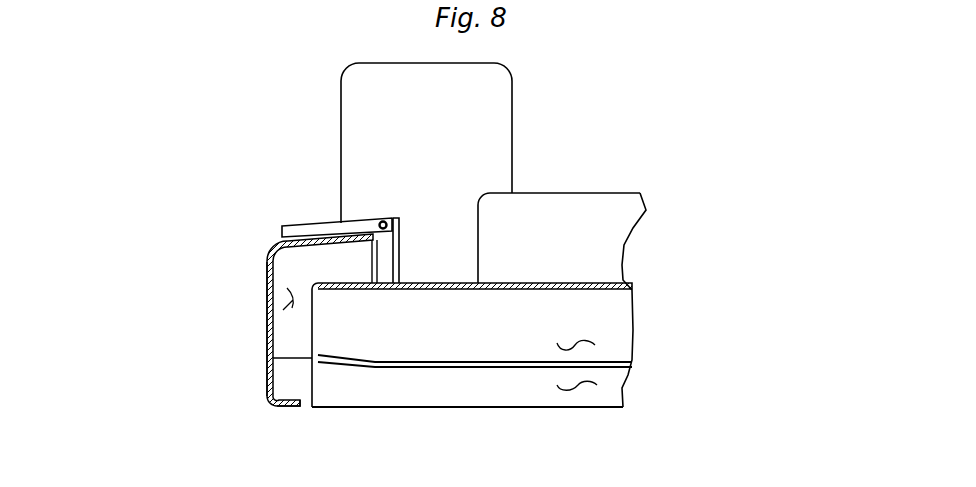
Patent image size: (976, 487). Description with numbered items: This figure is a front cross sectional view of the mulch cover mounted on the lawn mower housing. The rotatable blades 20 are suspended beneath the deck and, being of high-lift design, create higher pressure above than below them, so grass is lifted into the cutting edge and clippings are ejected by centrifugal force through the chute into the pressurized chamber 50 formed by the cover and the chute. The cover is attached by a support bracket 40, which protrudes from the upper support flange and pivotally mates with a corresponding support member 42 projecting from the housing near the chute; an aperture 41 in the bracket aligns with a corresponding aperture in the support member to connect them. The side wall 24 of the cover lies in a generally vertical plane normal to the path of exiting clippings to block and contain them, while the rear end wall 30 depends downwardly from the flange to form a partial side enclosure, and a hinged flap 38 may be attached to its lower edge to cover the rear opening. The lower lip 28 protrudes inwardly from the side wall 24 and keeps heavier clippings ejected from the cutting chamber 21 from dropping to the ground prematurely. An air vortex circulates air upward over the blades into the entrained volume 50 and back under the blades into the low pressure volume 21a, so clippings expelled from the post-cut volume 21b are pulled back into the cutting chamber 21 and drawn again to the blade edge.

The rotatable blades 20 is at (607, 355).
The cutting chamber 21 is at (640, 378).
The low pressure volume 21a is at (583, 382).
The post-cut volume 21b is at (577, 347).
The side wall 24 is at (267, 280).
The lower lip 28 is at (290, 408).
The rear end wall 30 is at (267, 252).
The hinged flap 38 is at (290, 380).
The support bracket 40 is at (291, 233).
The aperture 41 is at (384, 223).
The support member 42 is at (400, 253).
The pressurized chamber 50 is at (300, 283).